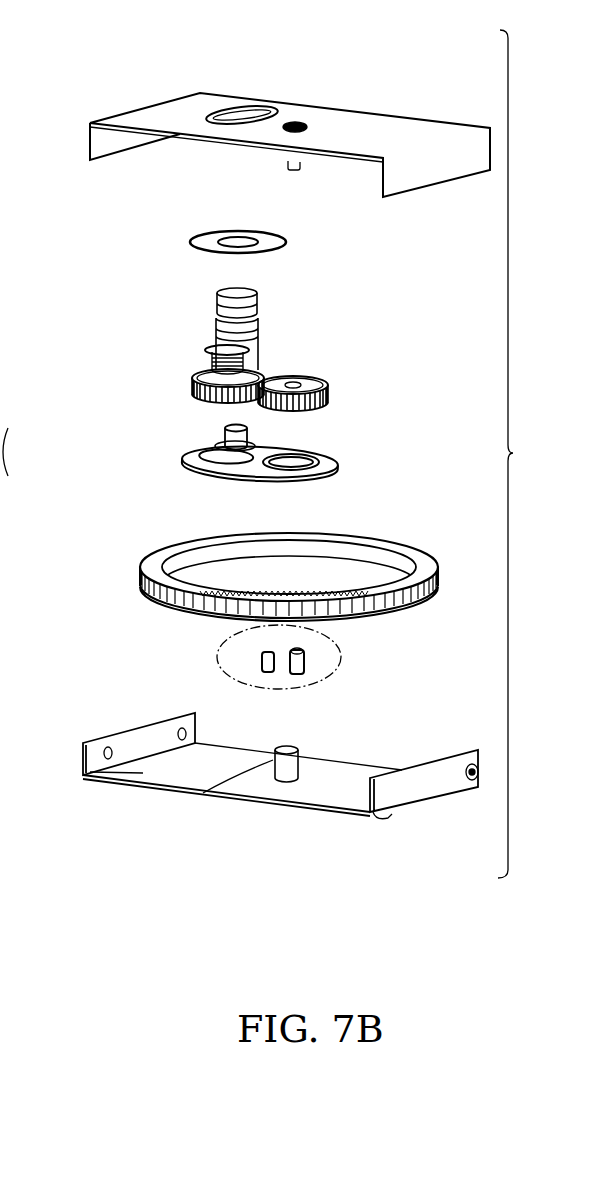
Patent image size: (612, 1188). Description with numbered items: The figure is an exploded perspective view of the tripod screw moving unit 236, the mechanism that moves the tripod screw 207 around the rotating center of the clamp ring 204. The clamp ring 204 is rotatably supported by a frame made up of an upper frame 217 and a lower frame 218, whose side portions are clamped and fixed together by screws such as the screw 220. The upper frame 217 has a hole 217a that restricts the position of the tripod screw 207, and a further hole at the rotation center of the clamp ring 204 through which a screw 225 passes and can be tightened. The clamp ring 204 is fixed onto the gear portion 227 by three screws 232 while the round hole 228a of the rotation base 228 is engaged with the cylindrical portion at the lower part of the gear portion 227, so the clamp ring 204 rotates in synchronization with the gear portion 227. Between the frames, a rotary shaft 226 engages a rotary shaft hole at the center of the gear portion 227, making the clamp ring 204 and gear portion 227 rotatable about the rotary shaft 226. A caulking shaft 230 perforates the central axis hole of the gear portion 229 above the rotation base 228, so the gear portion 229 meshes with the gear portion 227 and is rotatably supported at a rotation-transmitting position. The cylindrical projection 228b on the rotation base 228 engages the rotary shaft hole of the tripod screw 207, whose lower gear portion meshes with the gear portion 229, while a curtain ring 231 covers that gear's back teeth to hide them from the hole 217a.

The clamp ring 204 is at (143, 583).
The tripod screw 207 is at (257, 303).
The upper frame 217 is at (290, 114).
The hole 217a is at (242, 110).
The lower frame 218 is at (251, 801).
The screw 220 is at (470, 787).
The screw 225 is at (293, 120).
The rotary shaft 226 is at (203, 793).
The gear portion 227 is at (327, 398).
The rotation base 228 is at (261, 491).
The round hole 228a is at (310, 477).
The cylindrical projection 228b is at (227, 430).
The gear portion 229 is at (193, 392).
The caulking shaft 230 is at (212, 345).
The curtain ring 231 is at (195, 230).
The screws 232 is at (290, 675).
The tripod screw moving unit 236 is at (538, 454).